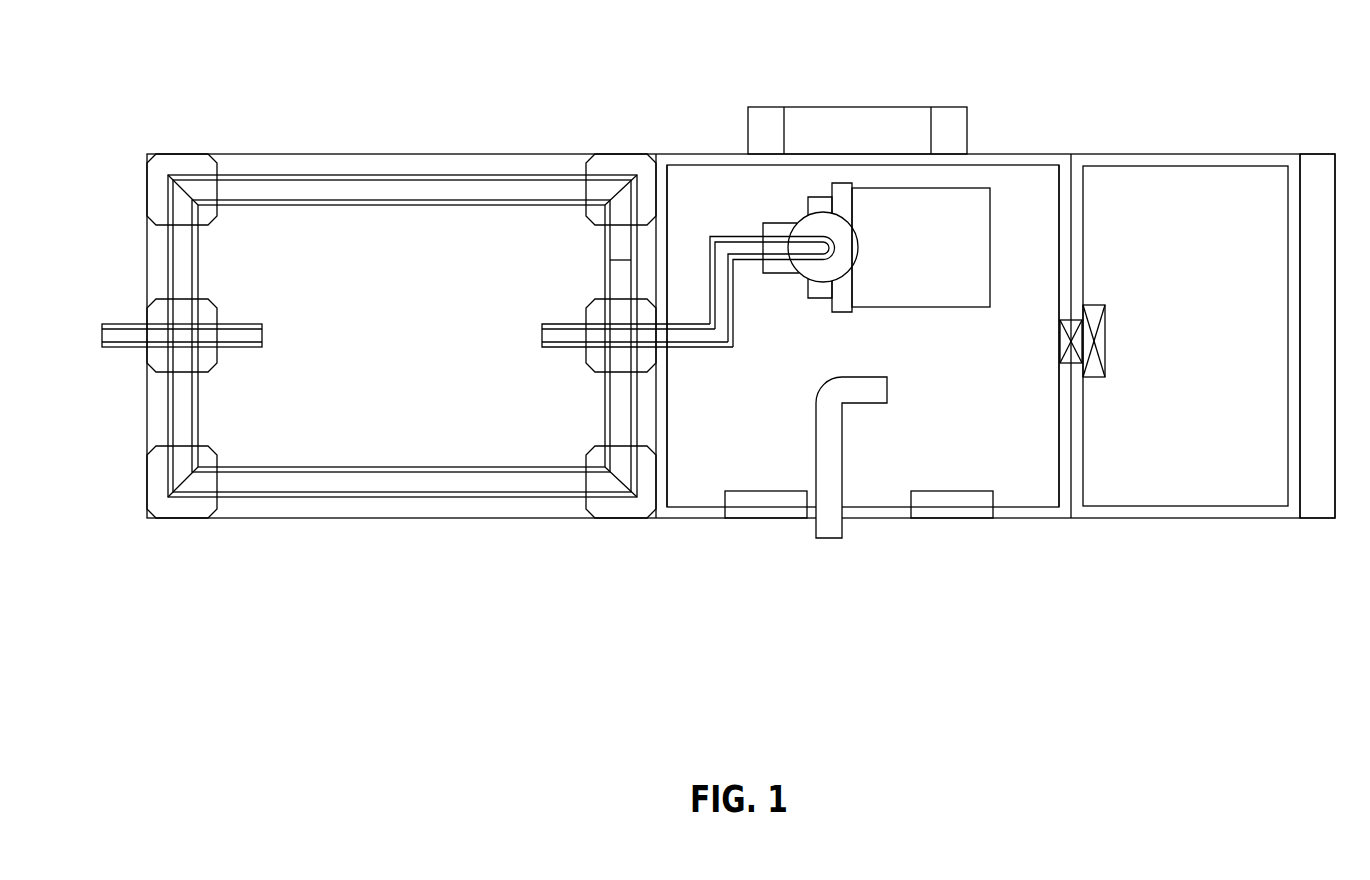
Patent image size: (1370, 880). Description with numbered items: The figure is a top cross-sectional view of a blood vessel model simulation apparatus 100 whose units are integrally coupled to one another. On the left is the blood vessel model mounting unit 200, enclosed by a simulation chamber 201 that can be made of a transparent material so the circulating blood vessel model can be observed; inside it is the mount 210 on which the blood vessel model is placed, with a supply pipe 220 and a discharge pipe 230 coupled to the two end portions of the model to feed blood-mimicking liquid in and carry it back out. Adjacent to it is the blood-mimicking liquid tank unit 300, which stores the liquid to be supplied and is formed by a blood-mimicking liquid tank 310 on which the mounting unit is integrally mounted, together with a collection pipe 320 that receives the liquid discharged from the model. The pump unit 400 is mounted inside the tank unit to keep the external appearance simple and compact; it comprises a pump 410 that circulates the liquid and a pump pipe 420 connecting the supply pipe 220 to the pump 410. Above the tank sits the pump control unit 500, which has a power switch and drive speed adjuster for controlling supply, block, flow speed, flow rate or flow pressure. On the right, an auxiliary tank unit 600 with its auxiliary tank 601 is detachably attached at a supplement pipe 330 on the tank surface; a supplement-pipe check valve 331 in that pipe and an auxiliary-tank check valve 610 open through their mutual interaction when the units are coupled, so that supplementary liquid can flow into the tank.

The blood vessel model simulation apparatus 100 is at (696, 609).
The blood vessel model mounting unit 200 is at (363, 118).
The simulation chamber 201 is at (297, 178).
The mount 210 is at (246, 247).
The supply pipe 220 is at (557, 346).
The discharge pipe 230 is at (245, 345).
The blood-mimicking liquid tank unit 300 is at (938, 535).
The blood-mimicking liquid tank 310 is at (812, 500).
The collection pipe 320 is at (863, 336).
The supplement pipe 330 is at (1063, 364).
The supplement-pipe check valve 331 is at (1063, 340).
The pump unit 400 is at (904, 296).
The pump 410 is at (963, 287).
The pump pipe 420 is at (730, 237).
The pump control unit 500 is at (811, 88).
The auxiliary tank unit 600 is at (1172, 133).
The auxiliary tank 601 is at (1317, 336).
The auxiliary-tank check valve 610 is at (1107, 338).